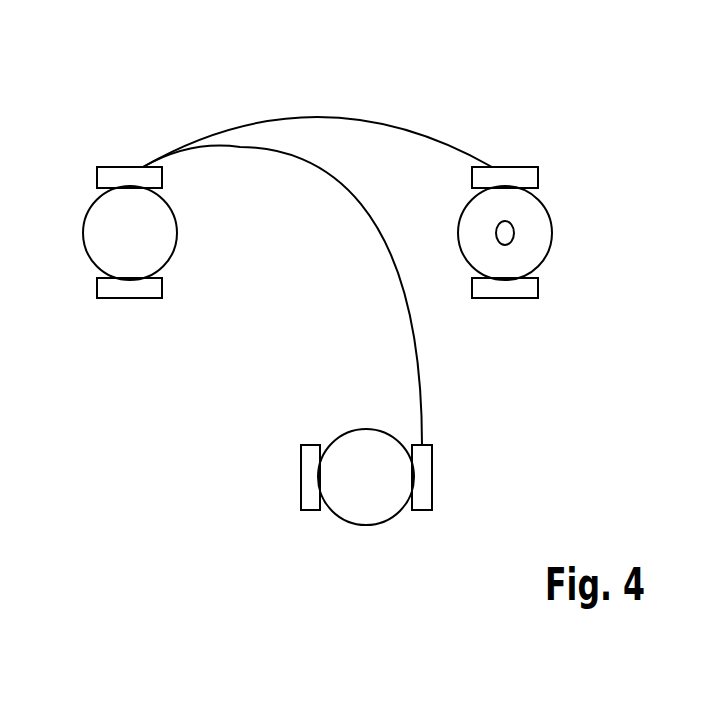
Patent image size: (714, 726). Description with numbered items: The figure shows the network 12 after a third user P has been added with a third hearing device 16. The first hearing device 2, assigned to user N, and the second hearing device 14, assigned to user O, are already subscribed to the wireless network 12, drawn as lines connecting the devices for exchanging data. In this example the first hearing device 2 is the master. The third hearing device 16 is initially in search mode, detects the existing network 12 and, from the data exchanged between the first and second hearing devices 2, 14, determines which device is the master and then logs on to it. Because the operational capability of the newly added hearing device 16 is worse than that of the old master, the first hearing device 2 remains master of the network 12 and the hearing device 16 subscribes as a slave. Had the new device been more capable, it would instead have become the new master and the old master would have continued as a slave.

The hearing device 2 is at (102, 168).
The network 12 is at (313, 118).
The hearing device 14 is at (528, 168).
The hearing device 16 is at (442, 495).